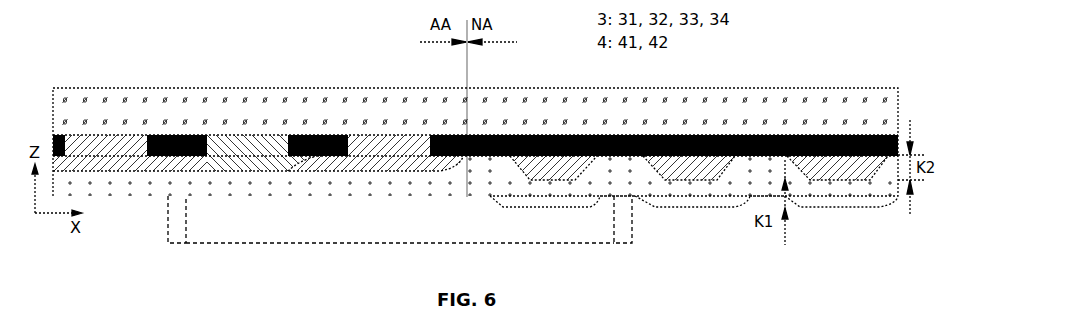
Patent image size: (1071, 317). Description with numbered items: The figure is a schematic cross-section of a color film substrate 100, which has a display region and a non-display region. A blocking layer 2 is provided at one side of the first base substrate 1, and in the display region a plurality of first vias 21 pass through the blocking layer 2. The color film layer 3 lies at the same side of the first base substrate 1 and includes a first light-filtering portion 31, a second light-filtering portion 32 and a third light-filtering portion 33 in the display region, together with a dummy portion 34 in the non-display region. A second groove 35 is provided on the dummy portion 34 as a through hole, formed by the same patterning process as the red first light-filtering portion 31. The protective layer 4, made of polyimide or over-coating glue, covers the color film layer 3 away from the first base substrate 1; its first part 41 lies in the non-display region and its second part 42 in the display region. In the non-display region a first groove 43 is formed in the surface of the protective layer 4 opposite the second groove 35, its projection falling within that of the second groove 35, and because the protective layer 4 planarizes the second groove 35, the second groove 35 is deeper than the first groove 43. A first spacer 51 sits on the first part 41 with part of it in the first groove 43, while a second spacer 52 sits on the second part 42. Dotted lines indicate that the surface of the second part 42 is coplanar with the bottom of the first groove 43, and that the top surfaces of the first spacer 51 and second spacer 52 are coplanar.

The color film substrate 100 is at (101, 72).
The first base substrate 1 is at (383, 103).
The blocking layer 2 is at (325, 140).
The first via 21 is at (280, 133).
The color film layer 3 is at (470, 127).
The first light-filtering portion 31 is at (402, 157).
The second light-filtering portion 32 is at (258, 150).
The third light-filtering portion 33 is at (102, 157).
The dummy portion 34 is at (847, 187).
The second groove 35 is at (592, 174).
The protective layer 4 is at (593, 137).
The first part 41 is at (552, 198).
The second part 42 is at (325, 157).
The first groove 43 is at (637, 198).
The first spacer 51 is at (632, 222).
The second spacer 52 is at (188, 222).